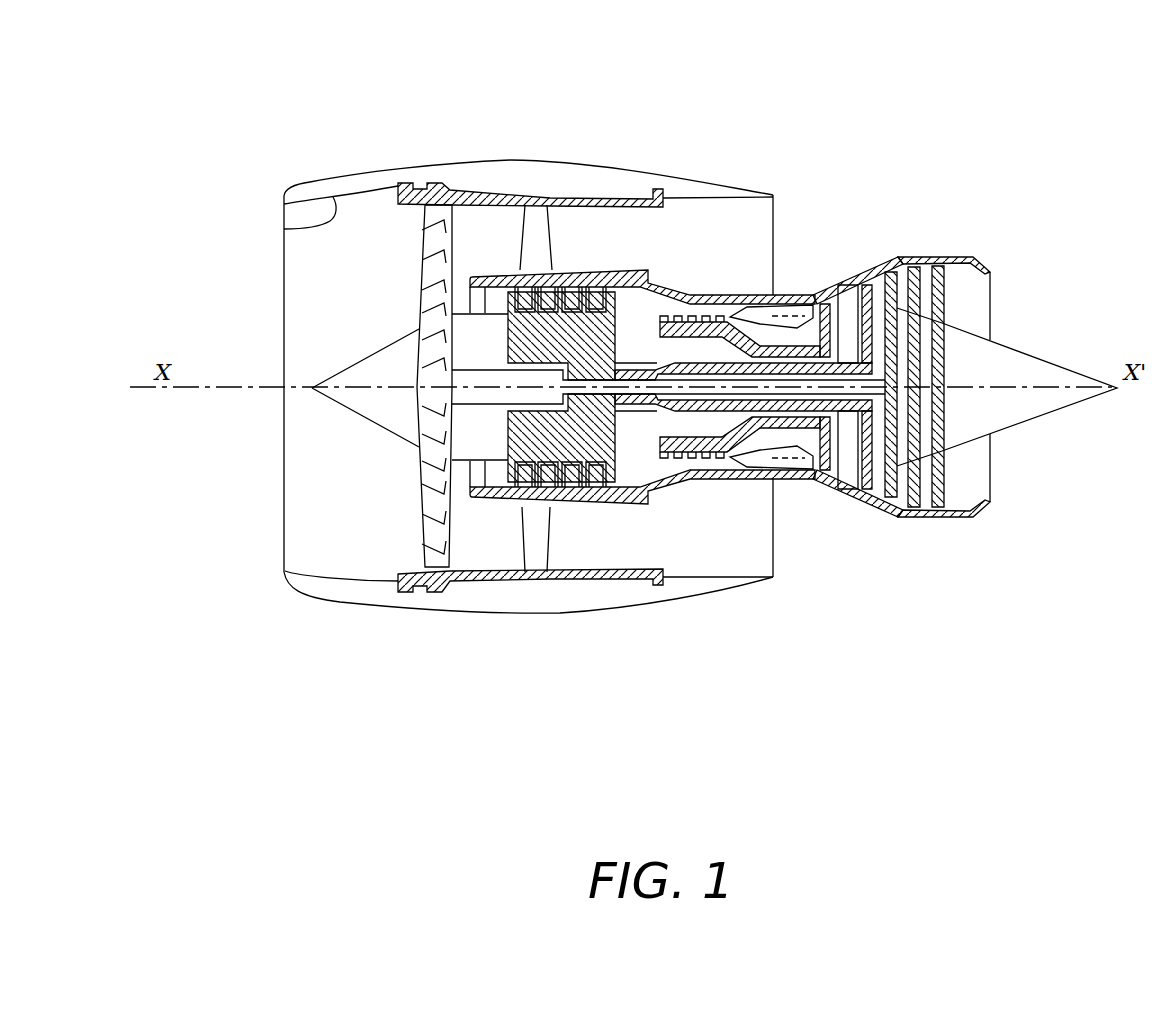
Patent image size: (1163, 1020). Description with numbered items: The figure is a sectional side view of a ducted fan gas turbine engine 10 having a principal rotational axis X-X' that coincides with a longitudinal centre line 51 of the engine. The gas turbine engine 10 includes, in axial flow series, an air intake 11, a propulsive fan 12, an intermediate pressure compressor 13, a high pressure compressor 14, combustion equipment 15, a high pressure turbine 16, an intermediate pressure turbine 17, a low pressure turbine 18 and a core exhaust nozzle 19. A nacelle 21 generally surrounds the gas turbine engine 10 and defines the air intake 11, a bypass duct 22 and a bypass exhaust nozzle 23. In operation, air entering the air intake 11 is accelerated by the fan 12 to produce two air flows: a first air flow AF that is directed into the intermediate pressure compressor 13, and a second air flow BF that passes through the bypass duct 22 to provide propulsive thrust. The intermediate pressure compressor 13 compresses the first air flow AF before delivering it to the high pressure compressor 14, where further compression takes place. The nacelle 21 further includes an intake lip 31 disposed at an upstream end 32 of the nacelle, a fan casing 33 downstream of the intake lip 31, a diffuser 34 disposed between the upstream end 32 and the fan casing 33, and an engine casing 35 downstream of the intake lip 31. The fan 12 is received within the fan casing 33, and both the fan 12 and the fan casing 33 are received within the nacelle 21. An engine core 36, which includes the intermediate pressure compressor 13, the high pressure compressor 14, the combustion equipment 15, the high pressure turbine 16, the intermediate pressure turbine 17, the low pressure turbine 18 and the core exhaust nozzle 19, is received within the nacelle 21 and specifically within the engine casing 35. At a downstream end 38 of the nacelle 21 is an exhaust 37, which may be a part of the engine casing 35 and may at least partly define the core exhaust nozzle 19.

The gas turbine engine 10 is at (230, 52).
The air intake 11 is at (284, 229).
The propulsive fan 12 is at (419, 513).
The intermediate pressure compressor 13 is at (557, 492).
The high pressure compressor 14 is at (710, 197).
The combustion equipment 15 is at (765, 460).
The high pressure turbine 16 is at (822, 480).
The intermediate pressure turbine 17 is at (863, 290).
The low pressure turbine 18 is at (890, 507).
The core exhaust nozzle 19 is at (975, 262).
The nacelle 21 is at (527, 178).
The bypass duct 22 is at (751, 247).
The bypass exhaust nozzle 23 is at (773, 195).
The intake lip 31 is at (284, 204).
The upstream end 32 is at (270, 183).
The fan casing 33 is at (437, 190).
The diffuser 34 is at (351, 289).
The engine casing 35 is at (605, 270).
The engine core 36 is at (464, 277).
The exhaust 37 is at (993, 292).
The downstream end 38 is at (1012, 256).
The longitudinal centre line 51 is at (230, 386).
The second air flow BF is at (455, 247).
The first air flow AF is at (455, 312).